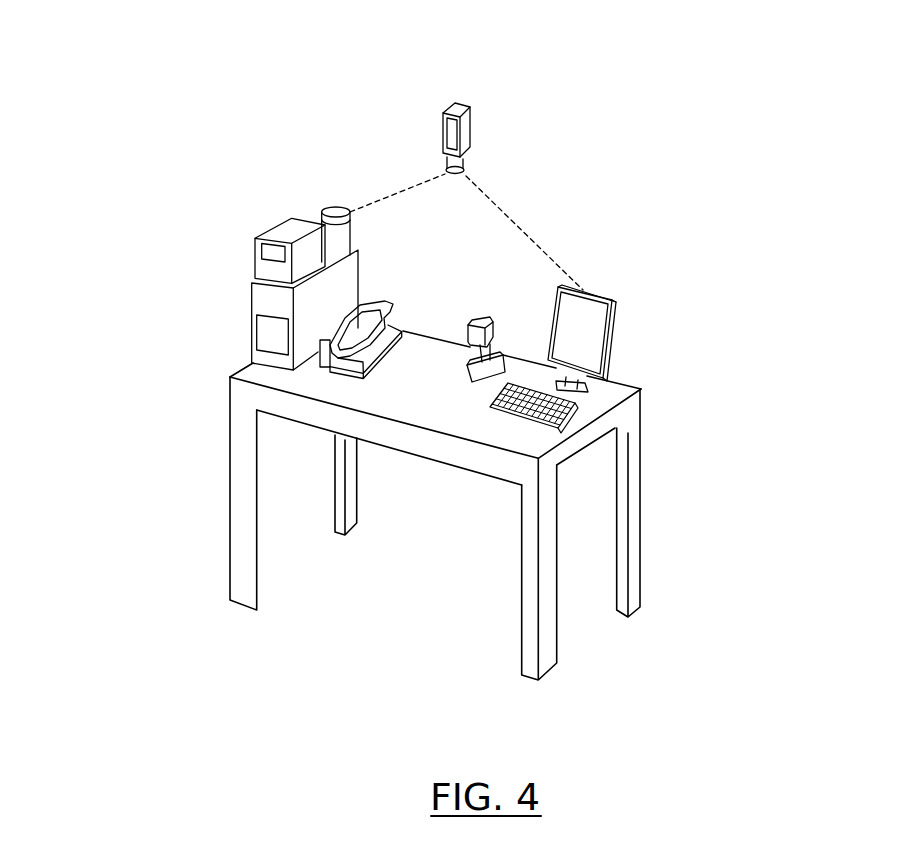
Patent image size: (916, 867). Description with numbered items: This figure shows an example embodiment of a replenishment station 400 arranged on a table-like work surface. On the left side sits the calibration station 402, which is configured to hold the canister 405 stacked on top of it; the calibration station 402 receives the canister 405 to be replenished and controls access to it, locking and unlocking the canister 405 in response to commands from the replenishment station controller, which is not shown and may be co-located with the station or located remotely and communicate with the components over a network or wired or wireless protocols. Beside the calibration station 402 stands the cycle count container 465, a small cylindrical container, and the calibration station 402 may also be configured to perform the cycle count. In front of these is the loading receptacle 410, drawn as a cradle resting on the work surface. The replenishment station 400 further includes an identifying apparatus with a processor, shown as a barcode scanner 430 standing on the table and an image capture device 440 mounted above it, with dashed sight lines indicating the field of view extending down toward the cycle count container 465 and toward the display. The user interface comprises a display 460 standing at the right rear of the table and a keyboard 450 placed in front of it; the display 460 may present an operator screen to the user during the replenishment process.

The replenishment station 400 is at (694, 532).
The calibration station 402 is at (265, 305).
The canister 405 is at (273, 235).
The loading receptacle 410 is at (323, 363).
The barcode scanner 430 is at (492, 318).
The image capture device 440 is at (466, 118).
The keyboard 450 is at (573, 407).
The display 460 is at (595, 332).
The cycle count container 465 is at (325, 210).